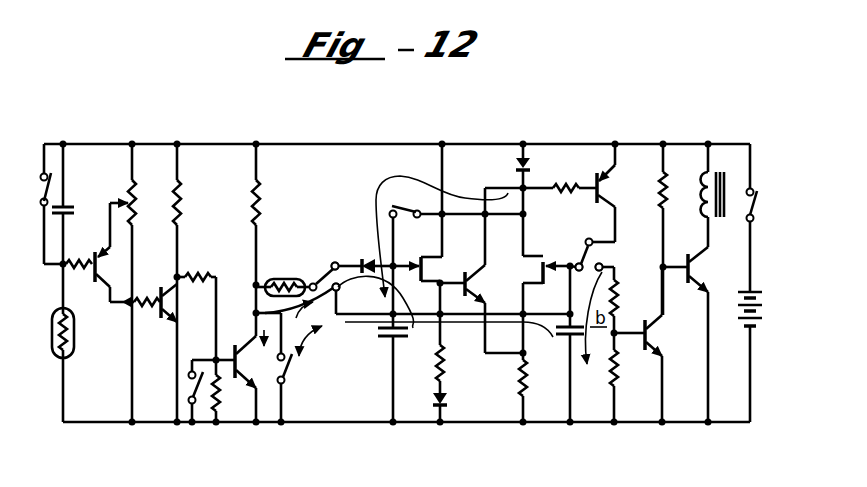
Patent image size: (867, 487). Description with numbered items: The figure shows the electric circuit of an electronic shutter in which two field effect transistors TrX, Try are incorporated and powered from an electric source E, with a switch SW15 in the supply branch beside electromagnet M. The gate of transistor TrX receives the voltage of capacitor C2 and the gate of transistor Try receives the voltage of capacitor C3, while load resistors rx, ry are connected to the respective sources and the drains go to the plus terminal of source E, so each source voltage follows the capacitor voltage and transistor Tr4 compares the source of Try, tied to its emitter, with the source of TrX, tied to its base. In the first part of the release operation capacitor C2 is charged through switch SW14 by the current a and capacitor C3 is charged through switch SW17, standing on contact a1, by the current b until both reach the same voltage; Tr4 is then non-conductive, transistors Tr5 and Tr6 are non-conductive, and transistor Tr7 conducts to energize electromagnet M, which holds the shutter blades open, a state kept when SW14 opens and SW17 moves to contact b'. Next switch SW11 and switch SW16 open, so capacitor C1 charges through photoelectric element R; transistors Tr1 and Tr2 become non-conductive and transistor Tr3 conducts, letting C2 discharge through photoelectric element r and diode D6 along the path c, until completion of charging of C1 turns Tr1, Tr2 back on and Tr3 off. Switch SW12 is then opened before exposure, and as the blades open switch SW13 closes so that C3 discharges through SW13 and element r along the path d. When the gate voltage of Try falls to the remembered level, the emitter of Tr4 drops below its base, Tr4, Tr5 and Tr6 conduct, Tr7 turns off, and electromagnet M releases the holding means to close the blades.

The switch SW11 is at (62, 191).
The capacitor C1 is at (73, 204).
The transistor Tr1 is at (98, 252).
The transistor Tr2 is at (143, 317).
The transistor Tr3 is at (236, 367).
The photoelectric element R is at (72, 343).
The switch SW16 is at (193, 407).
The photoelectric element r is at (283, 274).
The switch SW12 is at (343, 262).
The charging current a is at (421, 171).
The charging current b is at (343, 296).
The diode D6 is at (377, 260).
The discharge current c is at (308, 337).
The current path d is at (341, 353).
The switch SW13 is at (312, 388).
The capacitor C2 is at (380, 375).
The switch SW14 is at (457, 226).
The field effect transistor TrX is at (425, 271).
The load resistor rx is at (451, 363).
The transistor Tr4 is at (494, 270).
The field effect transistor Try is at (530, 295).
The load resistor ry is at (533, 387).
The transistor Tr5 is at (582, 193).
The switch SW17 is at (617, 258).
The switch contact a1 is at (573, 261).
The switch contact b' is at (601, 259).
The capacitor C3 is at (568, 374).
The transistor Tr6 is at (655, 344).
The transistor Tr7 is at (694, 319).
The electromagnet M is at (723, 180).
The switch SW15 is at (774, 218).
The electric source E is at (756, 357).